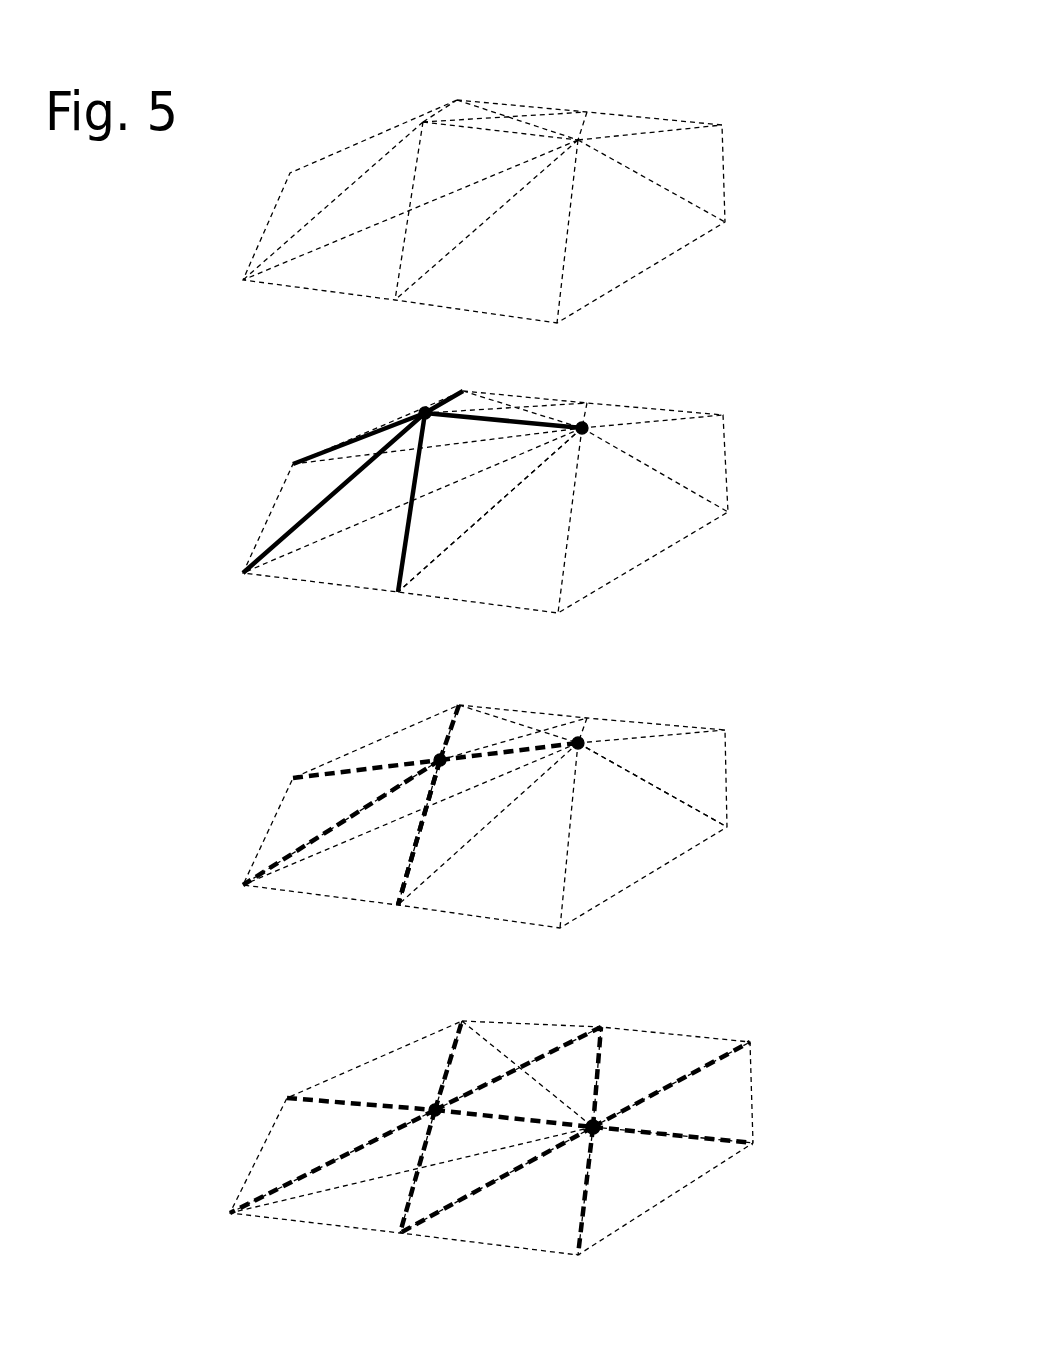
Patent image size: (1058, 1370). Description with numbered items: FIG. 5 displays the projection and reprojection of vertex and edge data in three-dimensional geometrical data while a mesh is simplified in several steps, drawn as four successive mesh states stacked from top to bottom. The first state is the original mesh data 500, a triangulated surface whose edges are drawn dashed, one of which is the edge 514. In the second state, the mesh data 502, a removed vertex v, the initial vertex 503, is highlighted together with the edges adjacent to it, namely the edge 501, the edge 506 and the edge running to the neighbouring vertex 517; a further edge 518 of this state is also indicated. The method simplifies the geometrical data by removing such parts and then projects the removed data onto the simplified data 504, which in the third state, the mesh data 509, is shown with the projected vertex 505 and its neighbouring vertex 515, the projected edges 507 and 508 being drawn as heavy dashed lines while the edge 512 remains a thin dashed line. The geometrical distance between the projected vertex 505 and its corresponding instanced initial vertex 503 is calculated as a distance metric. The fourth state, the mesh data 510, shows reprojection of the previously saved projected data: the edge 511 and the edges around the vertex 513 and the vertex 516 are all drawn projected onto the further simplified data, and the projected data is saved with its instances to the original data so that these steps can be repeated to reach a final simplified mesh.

The initial mesh 500 is at (484, 161).
The mesh edge 514 is at (508, 137).
The mesh with selected vertex and its edges 502 is at (446, 474).
The initial vertex 503 is at (425, 413).
The adjacent vertex 517 is at (582, 428).
The edge incident to selected vertex 501 is at (340, 445).
The edge incident to selected vertex 506 is at (414, 485).
The mesh edge 518 is at (437, 552).
The mesh with vertex neighborhood 509 is at (534, 800).
The simplified data 504 is at (368, 765).
The projected vertex 505 is at (440, 760).
The adjacent vertex 515 is at (588, 692).
The mesh edge 512 is at (685, 805).
The edge of vertex neighborhood 507 is at (398, 870).
The edge of vertex neighborhood 508 is at (430, 787).
The mesh with two vertex neighborhoods 510 is at (491, 1108).
The edge of vertex neighborhood 511 is at (363, 1102).
The first vertex 513 is at (435, 1110).
The second vertex 516 is at (597, 1133).